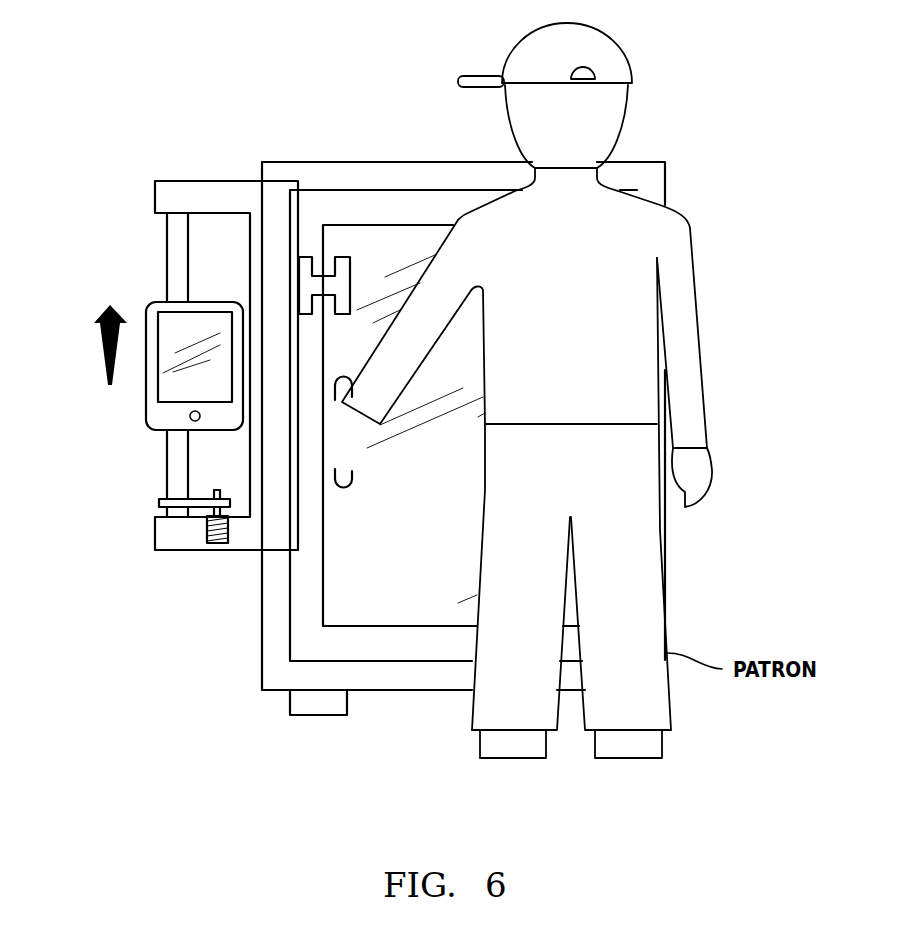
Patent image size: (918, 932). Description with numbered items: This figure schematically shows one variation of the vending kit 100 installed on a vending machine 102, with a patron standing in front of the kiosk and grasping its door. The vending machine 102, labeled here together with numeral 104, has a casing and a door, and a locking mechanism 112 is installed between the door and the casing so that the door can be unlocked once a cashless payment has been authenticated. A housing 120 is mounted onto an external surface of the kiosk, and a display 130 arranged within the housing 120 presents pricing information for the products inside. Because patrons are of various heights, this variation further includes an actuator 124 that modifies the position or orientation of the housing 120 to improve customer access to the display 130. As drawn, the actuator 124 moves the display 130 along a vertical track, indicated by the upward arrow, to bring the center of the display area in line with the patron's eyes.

The vending kit 100 is at (281, 63).
The vending machine 102 is at (667, 172).
The door 104 is at (554, 370).
The locking mechanism 112 is at (307, 257).
The housing 120 is at (209, 181).
The actuator 124 is at (146, 472).
The display 130 is at (173, 385).